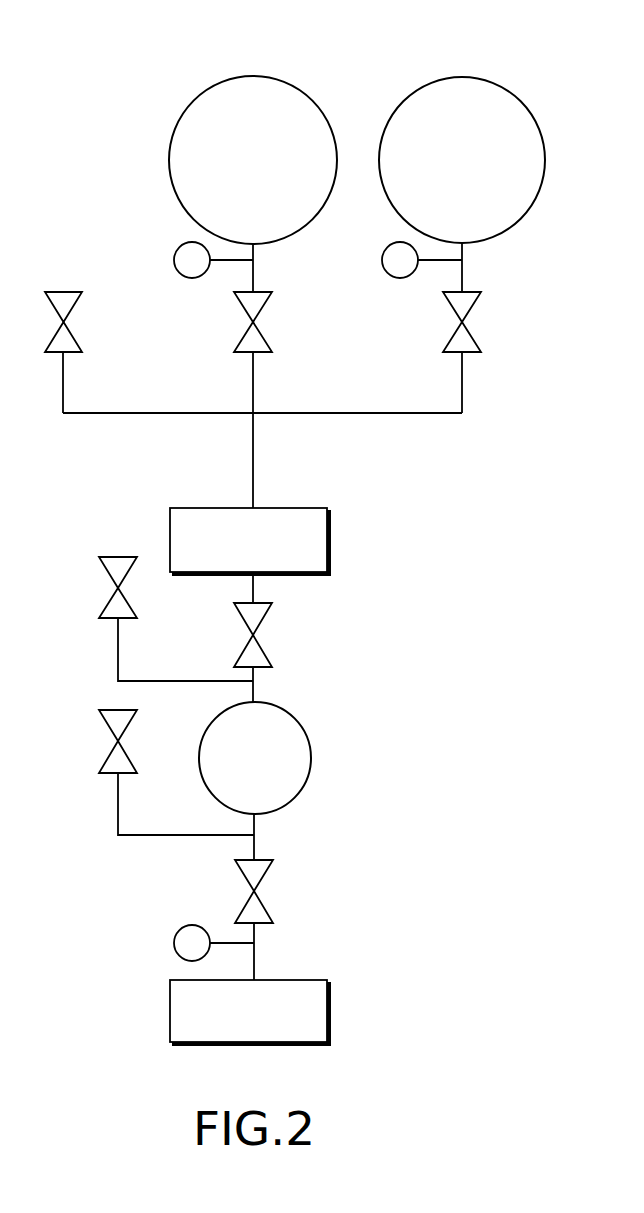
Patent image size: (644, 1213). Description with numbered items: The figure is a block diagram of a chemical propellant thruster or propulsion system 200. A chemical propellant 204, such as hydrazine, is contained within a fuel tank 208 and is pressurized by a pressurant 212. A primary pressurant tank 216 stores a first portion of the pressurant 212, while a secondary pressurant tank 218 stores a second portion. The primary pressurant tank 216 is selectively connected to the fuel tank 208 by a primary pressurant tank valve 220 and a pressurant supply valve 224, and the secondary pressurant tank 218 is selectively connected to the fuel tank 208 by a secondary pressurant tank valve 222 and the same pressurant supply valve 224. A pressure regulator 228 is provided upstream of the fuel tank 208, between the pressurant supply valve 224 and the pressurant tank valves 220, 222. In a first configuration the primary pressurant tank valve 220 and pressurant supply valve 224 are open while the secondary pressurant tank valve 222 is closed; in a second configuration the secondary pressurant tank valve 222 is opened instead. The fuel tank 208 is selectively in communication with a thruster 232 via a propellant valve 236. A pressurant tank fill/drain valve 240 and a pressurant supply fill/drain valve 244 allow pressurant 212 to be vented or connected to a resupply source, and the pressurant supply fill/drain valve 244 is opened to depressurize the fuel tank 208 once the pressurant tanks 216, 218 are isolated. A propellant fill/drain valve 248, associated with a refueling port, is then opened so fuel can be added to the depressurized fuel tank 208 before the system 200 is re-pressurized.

The chemical propellant thruster system 200 is at (379, 60).
The chemical propellant 204 is at (294, 746).
The fuel tank 208 is at (305, 785).
The pressurant 212 is at (307, 159).
The primary pressurant tank 216 is at (183, 118).
The secondary pressurant tank 218 is at (488, 243).
The primary pressurant tank valve 220 is at (250, 307).
The secondary pressurant tank valve 222 is at (457, 307).
The pressurant supply valve 224 is at (265, 652).
The pressure regulator 228 is at (329, 523).
The thruster 232 is at (327, 1002).
The propellant valve 236 is at (265, 872).
The pressurant tank fill/drain valve 240 is at (58, 312).
The pressurant supply fill/drain valve 244 is at (115, 572).
The propellant fill/drain valve 248 is at (115, 727).